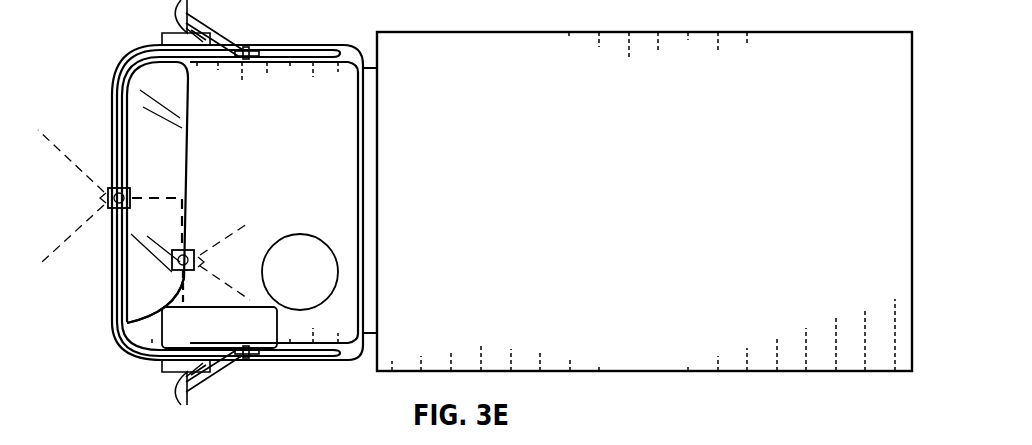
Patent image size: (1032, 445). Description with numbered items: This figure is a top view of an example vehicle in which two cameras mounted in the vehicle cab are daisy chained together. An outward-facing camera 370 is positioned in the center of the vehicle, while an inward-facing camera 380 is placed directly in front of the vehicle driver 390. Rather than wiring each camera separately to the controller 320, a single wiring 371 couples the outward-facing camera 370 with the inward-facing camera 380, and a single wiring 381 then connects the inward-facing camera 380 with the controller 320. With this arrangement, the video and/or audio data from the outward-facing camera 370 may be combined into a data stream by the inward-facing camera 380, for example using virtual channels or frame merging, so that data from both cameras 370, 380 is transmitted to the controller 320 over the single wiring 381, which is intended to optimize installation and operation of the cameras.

The controller 320 is at (277, 333).
The outward-facing camera 370 is at (108, 190).
The wiring 371 is at (163, 195).
The inward-facing camera 380 is at (192, 250).
The wiring 381 is at (120, 323).
The vehicle driver 390 is at (297, 235).